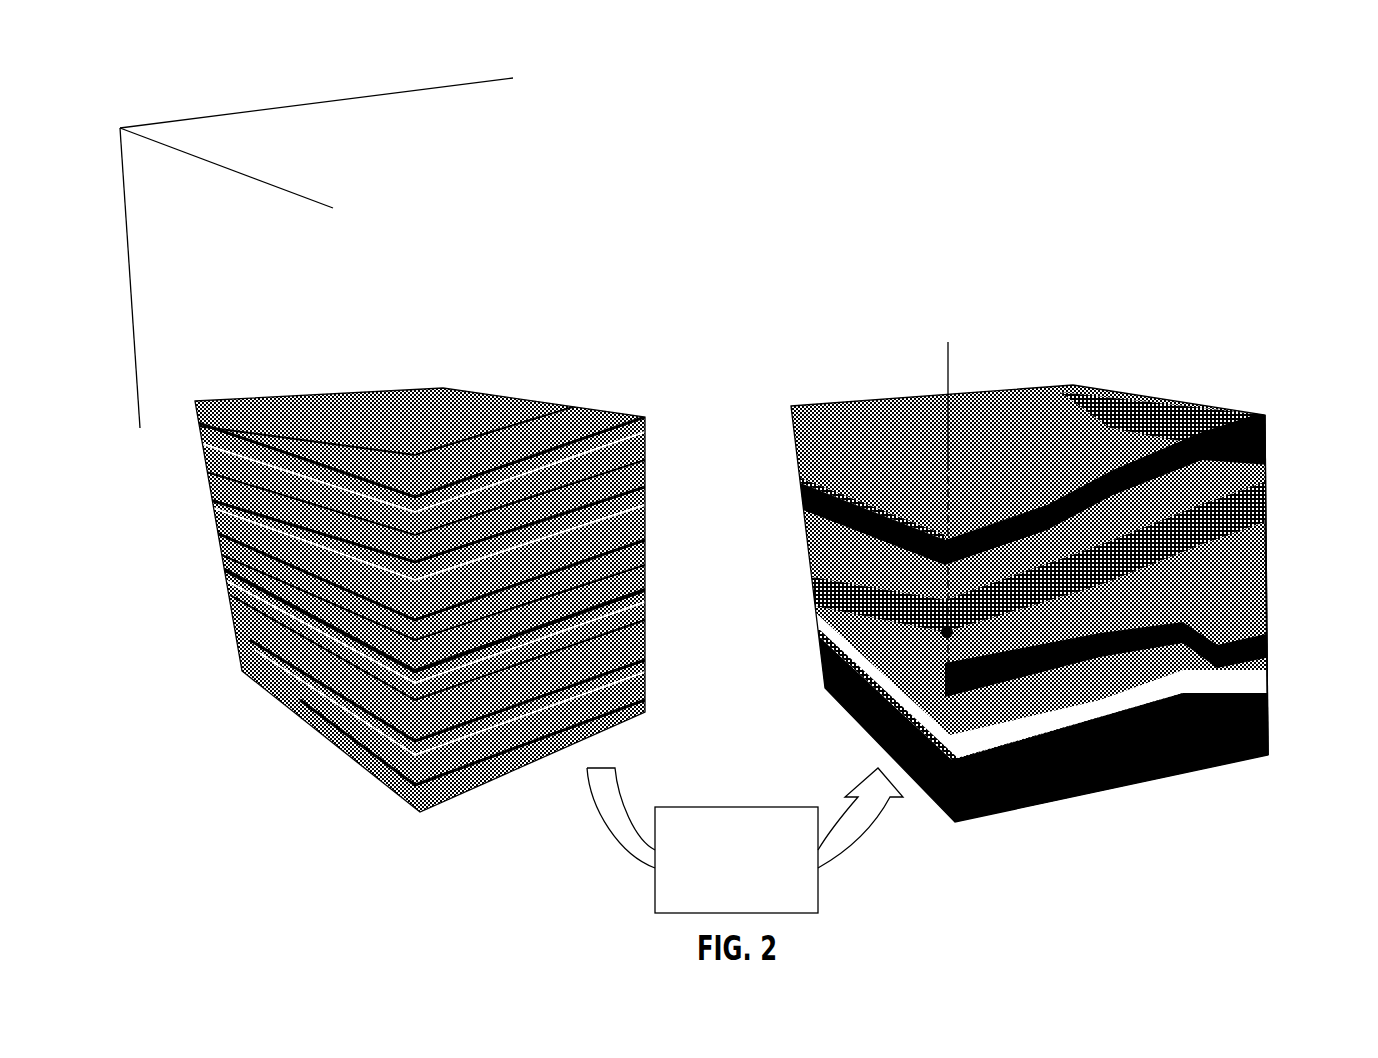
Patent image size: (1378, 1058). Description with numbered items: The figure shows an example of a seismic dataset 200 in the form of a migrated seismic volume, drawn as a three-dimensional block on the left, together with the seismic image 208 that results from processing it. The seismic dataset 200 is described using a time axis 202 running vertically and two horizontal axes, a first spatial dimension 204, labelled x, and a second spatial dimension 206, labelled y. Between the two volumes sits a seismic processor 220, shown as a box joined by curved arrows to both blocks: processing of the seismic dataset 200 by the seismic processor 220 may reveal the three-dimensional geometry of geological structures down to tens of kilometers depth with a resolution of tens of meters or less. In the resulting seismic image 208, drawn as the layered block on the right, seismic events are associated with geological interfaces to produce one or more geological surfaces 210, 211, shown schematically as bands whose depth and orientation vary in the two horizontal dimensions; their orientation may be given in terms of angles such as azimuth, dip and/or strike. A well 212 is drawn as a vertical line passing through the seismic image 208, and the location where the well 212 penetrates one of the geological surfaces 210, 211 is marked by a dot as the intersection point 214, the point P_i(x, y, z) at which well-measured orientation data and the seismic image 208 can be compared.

The seismic dataset 200 is at (540, 401).
The time axis 202 is at (132, 296).
The first spatial dimension 204 is at (233, 172).
The second spatial dimension 206 is at (300, 103).
The seismic image 208 is at (1127, 390).
The geological surface 210 is at (1257, 470).
The geological surface 211 is at (1267, 505).
The well 212 is at (944, 375).
The intersection point 214 is at (941, 631).
The seismic processor 220 is at (713, 904).